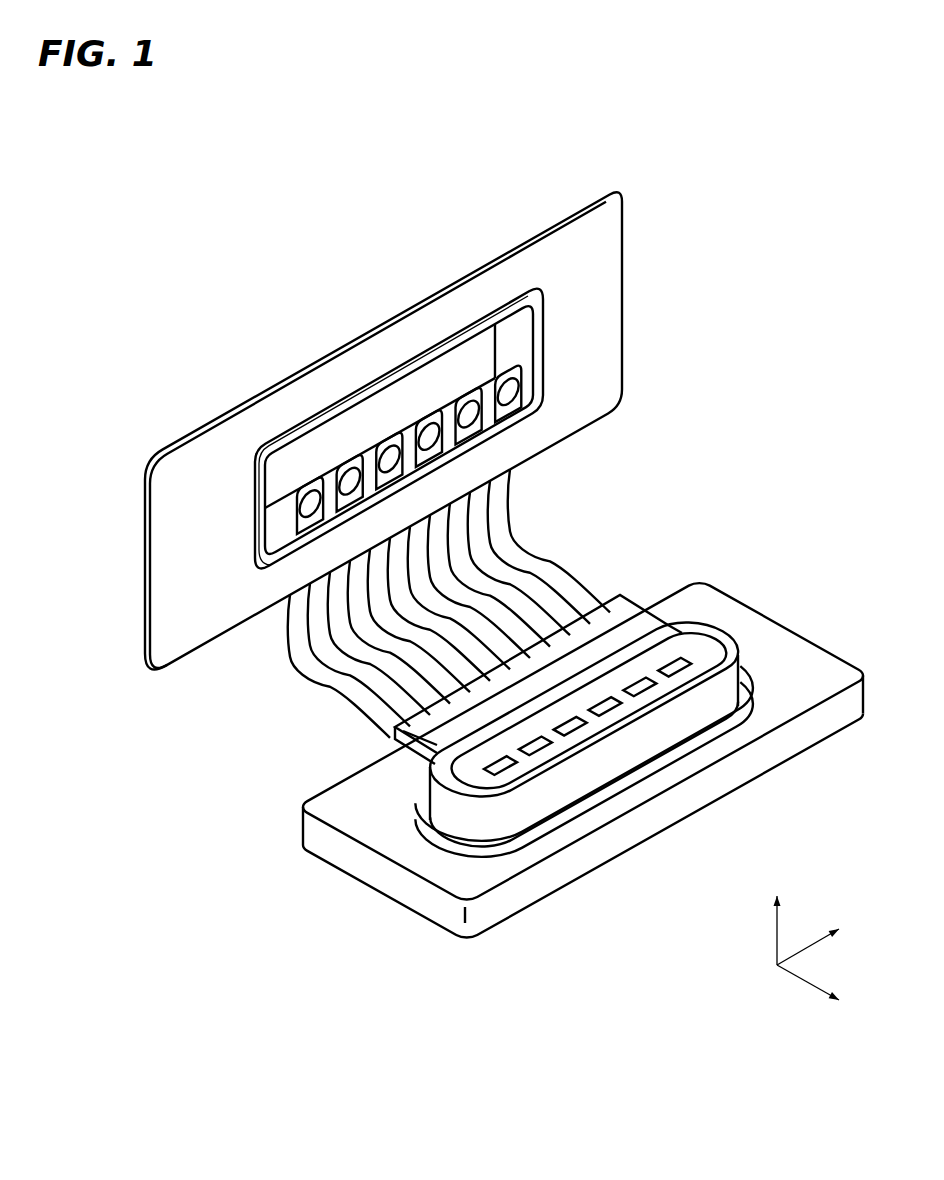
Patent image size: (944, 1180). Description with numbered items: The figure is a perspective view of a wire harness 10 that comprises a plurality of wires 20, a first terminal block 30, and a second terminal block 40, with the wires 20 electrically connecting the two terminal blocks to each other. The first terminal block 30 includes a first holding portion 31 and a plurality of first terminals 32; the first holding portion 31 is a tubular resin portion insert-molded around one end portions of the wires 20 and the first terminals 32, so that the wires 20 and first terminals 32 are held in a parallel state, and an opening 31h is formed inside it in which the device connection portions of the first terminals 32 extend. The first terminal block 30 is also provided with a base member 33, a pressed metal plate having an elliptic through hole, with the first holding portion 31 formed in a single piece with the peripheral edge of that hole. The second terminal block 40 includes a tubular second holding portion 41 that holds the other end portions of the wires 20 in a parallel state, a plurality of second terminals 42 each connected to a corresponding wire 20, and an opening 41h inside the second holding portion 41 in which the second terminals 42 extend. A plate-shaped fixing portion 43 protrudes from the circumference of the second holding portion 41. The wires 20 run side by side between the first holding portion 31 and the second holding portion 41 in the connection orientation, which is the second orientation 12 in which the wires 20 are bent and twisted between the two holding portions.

The wire harness 10 is at (237, 252).
The second orientation 12 is at (262, 691).
The wires 20 is at (487, 623).
The first terminal block 30 is at (437, 282).
The first holding portion 31 is at (541, 408).
The opening 31h is at (262, 482).
The first terminals 32 is at (318, 488).
The base member 33 is at (607, 298).
The second terminal block 40 is at (348, 900).
The second holding portion 41 is at (594, 776).
The opening 41h is at (713, 643).
The second terminals 42 is at (663, 677).
The fixing portion 43 is at (513, 900).